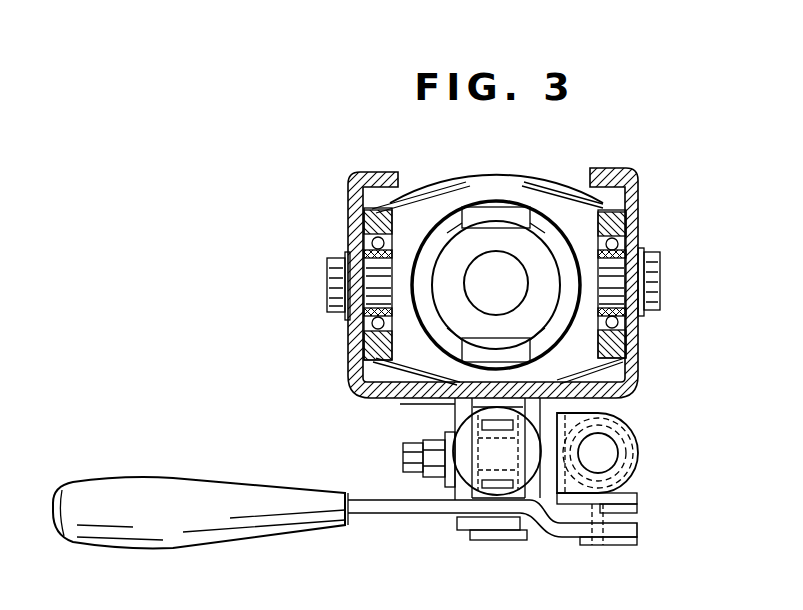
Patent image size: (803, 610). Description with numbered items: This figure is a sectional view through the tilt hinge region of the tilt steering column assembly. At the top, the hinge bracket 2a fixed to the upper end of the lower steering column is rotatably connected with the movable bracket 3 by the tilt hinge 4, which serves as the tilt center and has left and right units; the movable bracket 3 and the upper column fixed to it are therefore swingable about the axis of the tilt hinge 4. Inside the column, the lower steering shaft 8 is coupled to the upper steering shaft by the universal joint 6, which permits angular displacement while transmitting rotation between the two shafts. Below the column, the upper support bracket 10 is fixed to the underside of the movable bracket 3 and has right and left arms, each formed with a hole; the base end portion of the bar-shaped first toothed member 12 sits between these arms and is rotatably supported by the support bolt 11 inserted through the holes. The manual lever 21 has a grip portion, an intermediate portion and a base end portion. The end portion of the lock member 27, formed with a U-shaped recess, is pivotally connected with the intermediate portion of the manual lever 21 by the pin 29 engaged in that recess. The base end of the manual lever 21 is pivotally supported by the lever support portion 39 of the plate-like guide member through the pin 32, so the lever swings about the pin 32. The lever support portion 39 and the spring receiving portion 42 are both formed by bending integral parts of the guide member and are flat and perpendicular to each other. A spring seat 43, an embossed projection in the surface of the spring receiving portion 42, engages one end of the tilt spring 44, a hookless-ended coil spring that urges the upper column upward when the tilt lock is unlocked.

The hinge bracket 2a is at (558, 205).
The movable bracket 3 is at (636, 200).
The tilt hinge 4 is at (329, 263).
The universal joint 6 is at (468, 213).
The lower steering shaft 8 is at (498, 262).
The upper support bracket 10 is at (453, 404).
The support bolt 11 is at (403, 457).
The first toothed member 12 is at (491, 472).
The manual lever 21 is at (383, 514).
The lock member 27 is at (528, 524).
The pin 29 is at (492, 533).
The pin 32 is at (620, 539).
The lever support portion 39 is at (637, 498).
The spring receiving portion 42 is at (612, 413).
The spring seat 43 is at (607, 455).
The tilt spring 44 is at (640, 433).